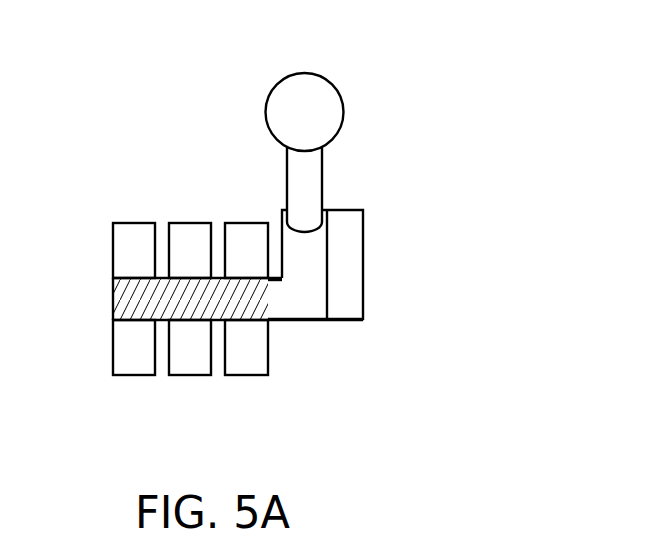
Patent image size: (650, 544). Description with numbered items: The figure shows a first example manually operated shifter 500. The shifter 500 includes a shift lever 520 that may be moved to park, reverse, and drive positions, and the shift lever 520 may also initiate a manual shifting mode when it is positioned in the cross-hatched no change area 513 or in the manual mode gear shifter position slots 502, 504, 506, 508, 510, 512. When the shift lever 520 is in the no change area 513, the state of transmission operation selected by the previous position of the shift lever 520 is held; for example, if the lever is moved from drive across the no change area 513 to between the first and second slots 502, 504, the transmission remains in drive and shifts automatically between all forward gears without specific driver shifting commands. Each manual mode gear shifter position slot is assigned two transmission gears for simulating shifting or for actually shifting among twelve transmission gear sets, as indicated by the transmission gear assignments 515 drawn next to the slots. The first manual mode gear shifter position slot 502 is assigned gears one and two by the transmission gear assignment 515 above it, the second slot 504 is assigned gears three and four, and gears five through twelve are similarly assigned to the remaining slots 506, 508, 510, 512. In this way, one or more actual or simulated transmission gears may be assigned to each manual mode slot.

The shifter 500 is at (484, 67).
The first manual mode gear shifter position slot 502 is at (153, 265).
The second manual mode gear shifter position slot 504 is at (153, 358).
The manual mode gear shifter position slot 506 is at (209, 265).
The manual mode gear shifter position slot 508 is at (209, 358).
The manual mode gear shifter position slot 510 is at (265, 265).
The manual mode gear shifter position slot 512 is at (265, 358).
The no change area 513 is at (113, 290).
The transmission gear assignment 515 is at (302, 425).
The shift lever 520 is at (335, 82).